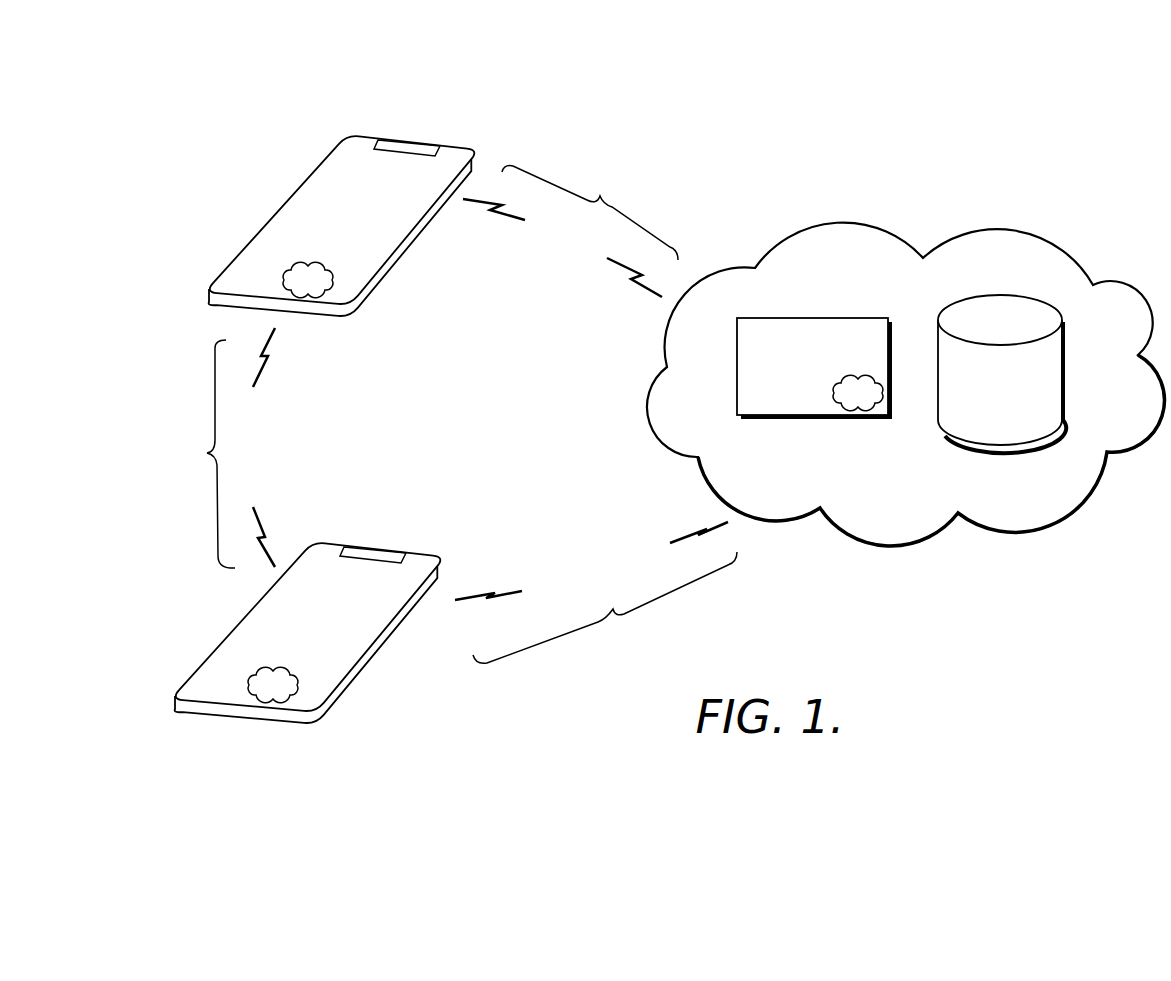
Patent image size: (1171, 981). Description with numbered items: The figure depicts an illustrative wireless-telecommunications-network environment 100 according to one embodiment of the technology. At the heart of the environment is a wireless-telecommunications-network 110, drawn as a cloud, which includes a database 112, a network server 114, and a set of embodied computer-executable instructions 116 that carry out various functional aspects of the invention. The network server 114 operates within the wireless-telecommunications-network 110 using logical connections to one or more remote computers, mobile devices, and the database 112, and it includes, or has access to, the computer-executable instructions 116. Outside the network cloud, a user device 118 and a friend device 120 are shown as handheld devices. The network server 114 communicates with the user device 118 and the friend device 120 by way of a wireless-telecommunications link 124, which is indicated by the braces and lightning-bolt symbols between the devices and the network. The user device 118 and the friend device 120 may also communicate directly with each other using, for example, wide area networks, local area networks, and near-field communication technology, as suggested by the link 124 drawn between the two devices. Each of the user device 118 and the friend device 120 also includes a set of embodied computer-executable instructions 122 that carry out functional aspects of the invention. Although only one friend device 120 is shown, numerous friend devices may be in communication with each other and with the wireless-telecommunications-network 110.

The wireless-telecommunications-network environment 100 is at (197, 66).
The wireless-telecommunications-network 110 is at (1000, 231).
The database 112 is at (1008, 295).
The network server 114 is at (815, 318).
The embodied computer-executable instructions 116 is at (858, 407).
The user device 118 is at (241, 620).
The friend device 120 is at (298, 191).
The embodied computer-executable instructions 122 is at (298, 264).
The wireless-telecommunications link 124 is at (451, 415).